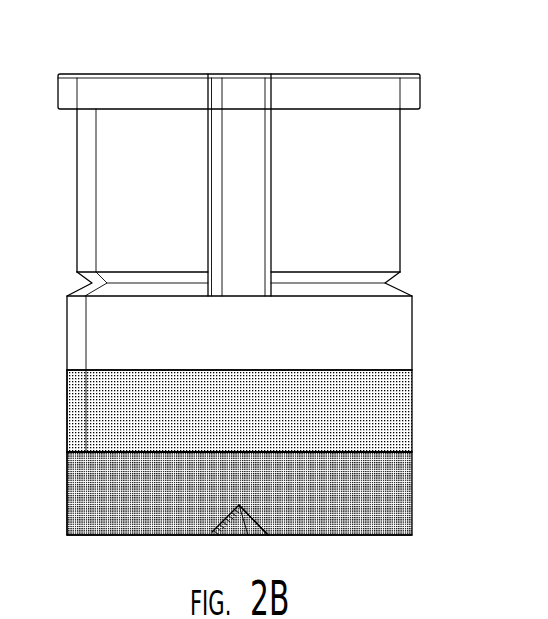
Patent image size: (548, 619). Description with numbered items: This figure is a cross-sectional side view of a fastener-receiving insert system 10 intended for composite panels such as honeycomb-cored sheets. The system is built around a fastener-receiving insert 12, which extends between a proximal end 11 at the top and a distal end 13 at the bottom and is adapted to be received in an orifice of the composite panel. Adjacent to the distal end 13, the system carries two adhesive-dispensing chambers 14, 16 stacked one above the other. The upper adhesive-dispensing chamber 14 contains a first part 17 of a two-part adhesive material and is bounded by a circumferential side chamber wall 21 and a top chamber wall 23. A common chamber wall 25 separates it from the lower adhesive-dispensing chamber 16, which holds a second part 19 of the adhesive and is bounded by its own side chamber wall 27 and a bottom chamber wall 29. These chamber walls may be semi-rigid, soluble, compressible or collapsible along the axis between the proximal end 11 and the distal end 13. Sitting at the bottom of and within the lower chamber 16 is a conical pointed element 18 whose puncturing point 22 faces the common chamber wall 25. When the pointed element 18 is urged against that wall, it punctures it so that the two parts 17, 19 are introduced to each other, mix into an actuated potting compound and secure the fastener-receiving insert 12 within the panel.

The fastener-receiving insert system 10 is at (452, 56).
The proximal end 11 is at (383, 74).
The fastener-receiving insert 12 is at (408, 213).
The distal end 13 is at (412, 342).
The adhesive-dispensing chamber 14 is at (412, 422).
The adhesive-dispensing chamber 16 is at (412, 493).
The first part 17 is at (127, 391).
The pointed element 18 is at (253, 537).
The second part 19 is at (110, 487).
The side chamber wall 21 is at (67, 438).
The puncturing point 22 is at (239, 505).
The top chamber wall 23 is at (107, 374).
The common chamber wall 25 is at (110, 452).
The side chamber wall 27 is at (120, 511).
The bottom chamber wall 29 is at (160, 537).